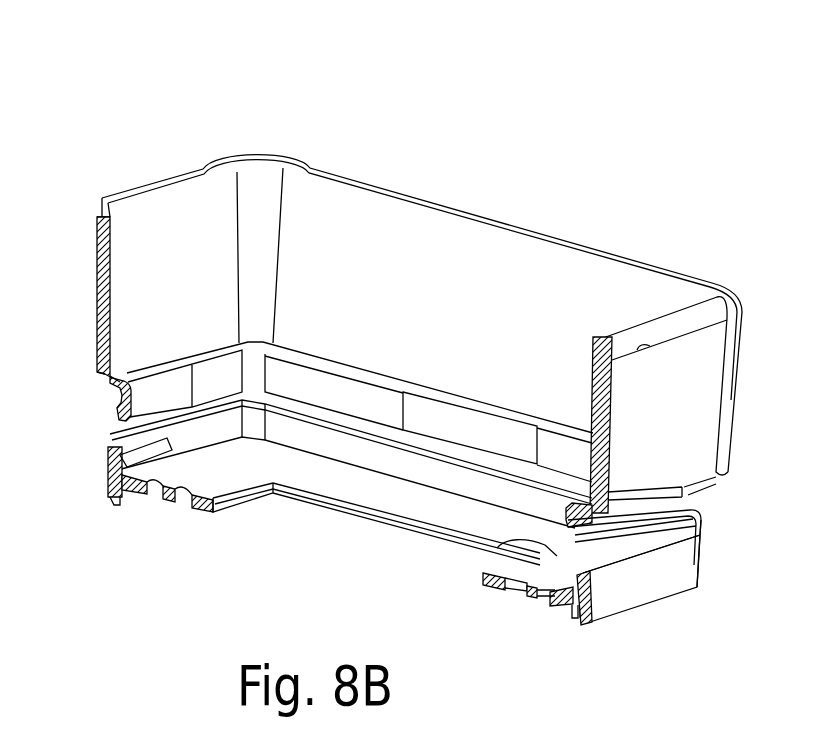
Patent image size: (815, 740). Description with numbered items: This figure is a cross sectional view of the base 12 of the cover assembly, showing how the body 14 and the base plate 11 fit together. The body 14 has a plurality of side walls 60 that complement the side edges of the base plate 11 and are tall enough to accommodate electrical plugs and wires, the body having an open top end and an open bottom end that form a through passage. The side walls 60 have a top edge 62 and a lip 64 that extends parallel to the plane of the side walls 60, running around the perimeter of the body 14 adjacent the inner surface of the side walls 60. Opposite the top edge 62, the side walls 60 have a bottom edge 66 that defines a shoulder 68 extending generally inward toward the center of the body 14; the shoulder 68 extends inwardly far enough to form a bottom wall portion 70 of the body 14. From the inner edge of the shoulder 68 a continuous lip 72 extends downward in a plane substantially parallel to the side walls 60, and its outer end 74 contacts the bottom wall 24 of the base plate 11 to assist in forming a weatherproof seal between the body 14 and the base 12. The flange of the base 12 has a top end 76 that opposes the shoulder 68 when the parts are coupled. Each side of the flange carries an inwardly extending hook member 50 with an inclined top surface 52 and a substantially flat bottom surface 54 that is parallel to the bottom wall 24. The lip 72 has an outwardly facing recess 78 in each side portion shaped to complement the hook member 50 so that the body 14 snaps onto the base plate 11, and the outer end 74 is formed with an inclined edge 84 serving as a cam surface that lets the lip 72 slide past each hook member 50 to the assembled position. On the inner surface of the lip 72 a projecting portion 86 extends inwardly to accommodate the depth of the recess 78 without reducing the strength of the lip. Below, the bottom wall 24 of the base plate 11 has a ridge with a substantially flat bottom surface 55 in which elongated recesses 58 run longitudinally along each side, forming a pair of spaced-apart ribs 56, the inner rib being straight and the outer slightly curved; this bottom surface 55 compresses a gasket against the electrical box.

The base plate 11 is at (707, 565).
The base 12 is at (727, 620).
The body 14 is at (735, 428).
The bottom wall 24 is at (447, 515).
The hook member 50 is at (167, 440).
The inclined top surface 52 is at (140, 457).
The bottom surface 54 is at (113, 475).
The bottom surface 55 is at (615, 620).
The ribs 56 is at (110, 500).
The recesses 58 is at (118, 498).
The side walls 60 is at (387, 220).
The top edge 62 is at (645, 347).
The lip 64 is at (565, 233).
The bottom edge 66 is at (103, 383).
The shoulder 68 is at (108, 390).
The bottom wall portion 70 is at (116, 377).
The lip 72 is at (700, 502).
The outer end 74 is at (120, 432).
The top end 76 is at (112, 445).
The recess 78 is at (620, 520).
The inclined edge 84 is at (122, 413).
The projecting portion 86 is at (166, 375).